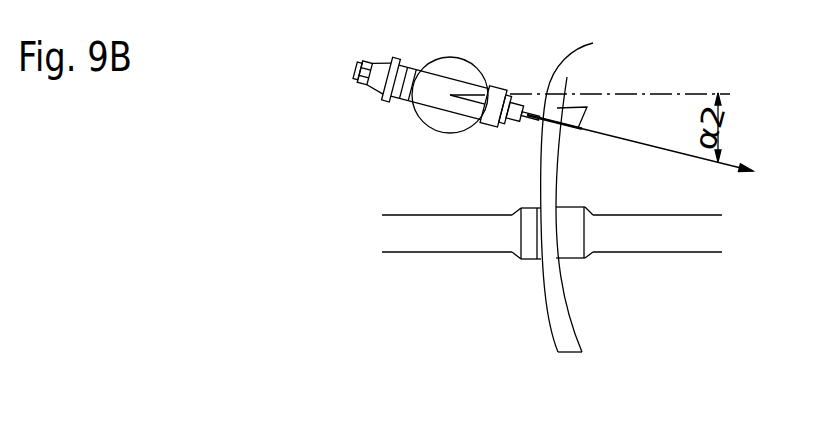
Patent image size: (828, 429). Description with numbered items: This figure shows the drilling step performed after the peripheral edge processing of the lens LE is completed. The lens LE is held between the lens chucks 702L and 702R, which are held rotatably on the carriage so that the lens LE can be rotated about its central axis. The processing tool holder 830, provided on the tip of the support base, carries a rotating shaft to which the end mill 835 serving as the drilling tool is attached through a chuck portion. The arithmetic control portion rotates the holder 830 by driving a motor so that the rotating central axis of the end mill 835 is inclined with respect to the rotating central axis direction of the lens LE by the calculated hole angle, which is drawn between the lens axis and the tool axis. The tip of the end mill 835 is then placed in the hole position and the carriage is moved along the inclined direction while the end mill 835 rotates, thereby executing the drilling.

The processing tool holder 830 is at (358, 141).
The end mill 835 is at (599, 186).
The lens LE is at (563, 211).
The lens chuck 702L is at (440, 245).
The lens chuck 702R is at (637, 253).